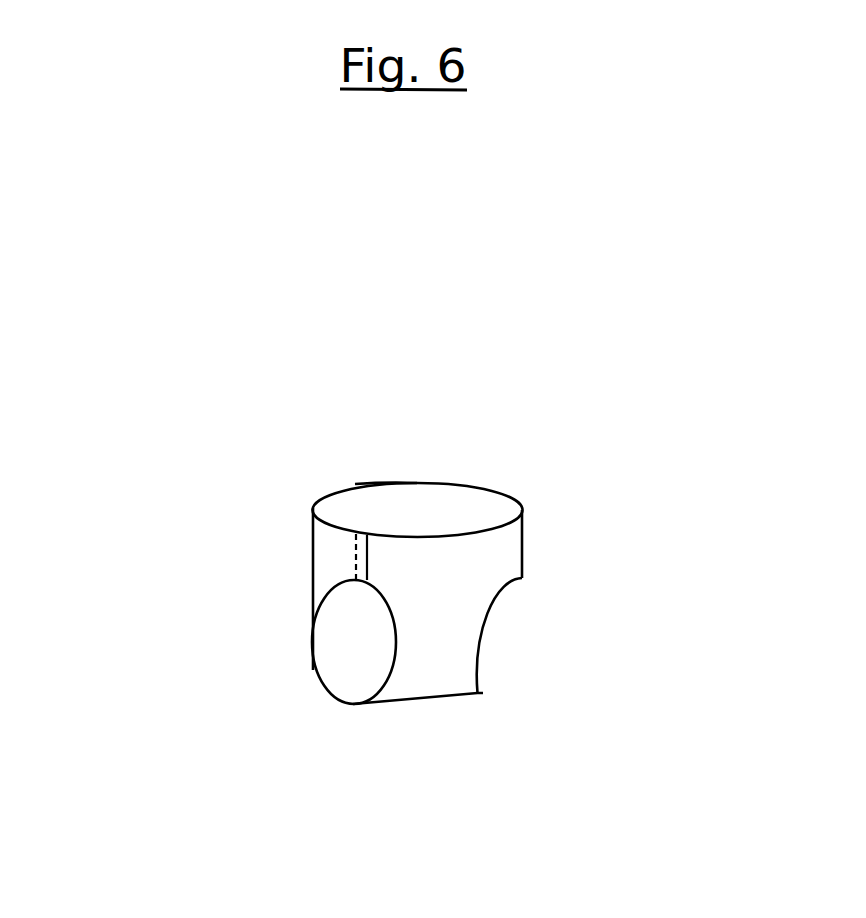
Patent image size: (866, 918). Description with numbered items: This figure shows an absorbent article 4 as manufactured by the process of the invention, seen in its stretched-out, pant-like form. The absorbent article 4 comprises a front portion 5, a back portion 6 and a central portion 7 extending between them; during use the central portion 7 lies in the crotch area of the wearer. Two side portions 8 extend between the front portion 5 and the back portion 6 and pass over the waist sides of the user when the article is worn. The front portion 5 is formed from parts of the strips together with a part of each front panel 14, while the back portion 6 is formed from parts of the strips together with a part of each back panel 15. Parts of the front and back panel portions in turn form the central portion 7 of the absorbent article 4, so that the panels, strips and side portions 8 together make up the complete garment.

The absorbent article 4 is at (429, 425).
The back panel 15 is at (397, 481).
The back portion 6 is at (387, 481).
The side portions 8 is at (538, 531).
The front panel 14 is at (465, 580).
The front portion 5 is at (450, 596).
The central portion 7 is at (422, 692).